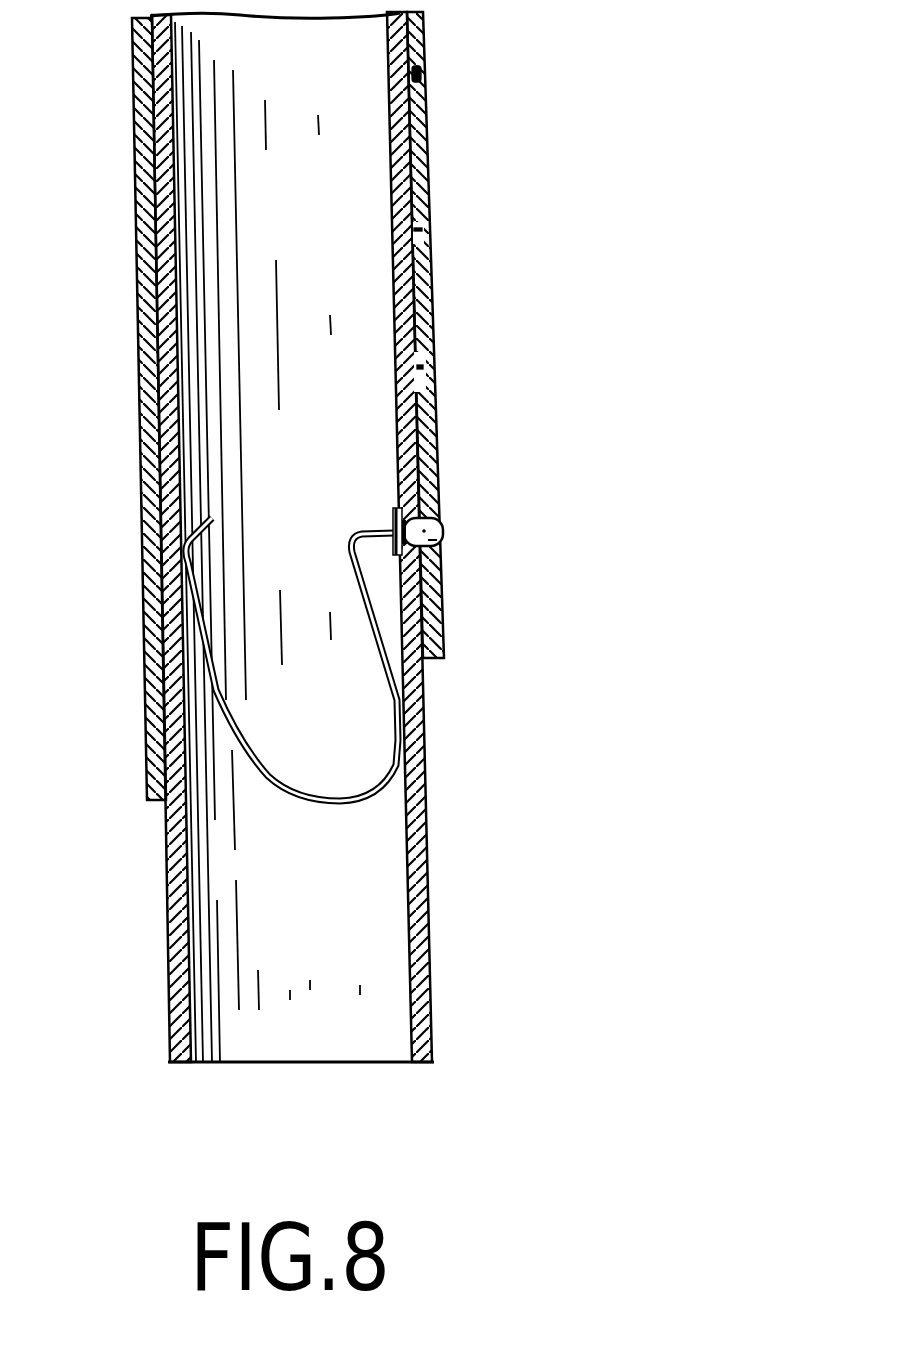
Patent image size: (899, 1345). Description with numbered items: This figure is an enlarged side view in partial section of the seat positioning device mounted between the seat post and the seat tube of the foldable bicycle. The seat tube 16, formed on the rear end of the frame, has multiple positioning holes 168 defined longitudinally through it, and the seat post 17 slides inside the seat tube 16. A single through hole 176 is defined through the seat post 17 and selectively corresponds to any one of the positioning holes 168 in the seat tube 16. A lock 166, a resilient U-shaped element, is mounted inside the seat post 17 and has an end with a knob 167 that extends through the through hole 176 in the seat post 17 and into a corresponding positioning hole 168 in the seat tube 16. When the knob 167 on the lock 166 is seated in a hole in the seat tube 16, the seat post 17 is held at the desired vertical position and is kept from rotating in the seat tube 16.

The seat tube 16 is at (138, 462).
The seat post 17 is at (176, 928).
The lock 166 is at (316, 820).
The knob 167 is at (443, 536).
The positioning holes 168 is at (423, 78).
The through hole 176 is at (393, 515).